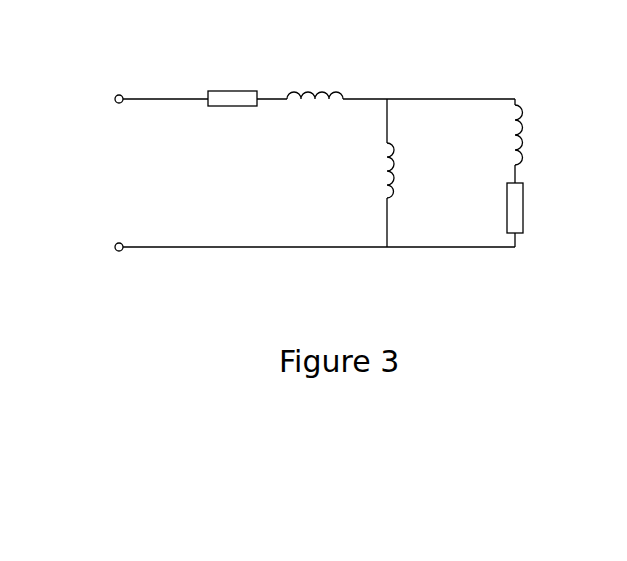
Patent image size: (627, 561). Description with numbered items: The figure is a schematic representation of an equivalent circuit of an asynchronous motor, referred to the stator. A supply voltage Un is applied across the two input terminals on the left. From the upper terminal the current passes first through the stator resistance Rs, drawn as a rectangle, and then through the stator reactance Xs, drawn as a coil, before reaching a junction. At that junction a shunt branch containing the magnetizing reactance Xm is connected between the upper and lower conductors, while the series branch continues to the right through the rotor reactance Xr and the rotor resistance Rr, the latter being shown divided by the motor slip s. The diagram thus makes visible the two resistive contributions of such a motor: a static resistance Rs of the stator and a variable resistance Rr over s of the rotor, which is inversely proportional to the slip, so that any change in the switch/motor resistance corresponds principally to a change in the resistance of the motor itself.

The supply voltage Un is at (110, 171).
The stator resistance Rs is at (232, 79).
The stator reactance Xs is at (315, 75).
The magnetizing reactance Xm is at (413, 170).
The rotor reactance Xr is at (538, 135).
The rotor resistance Rr is at (573, 208).